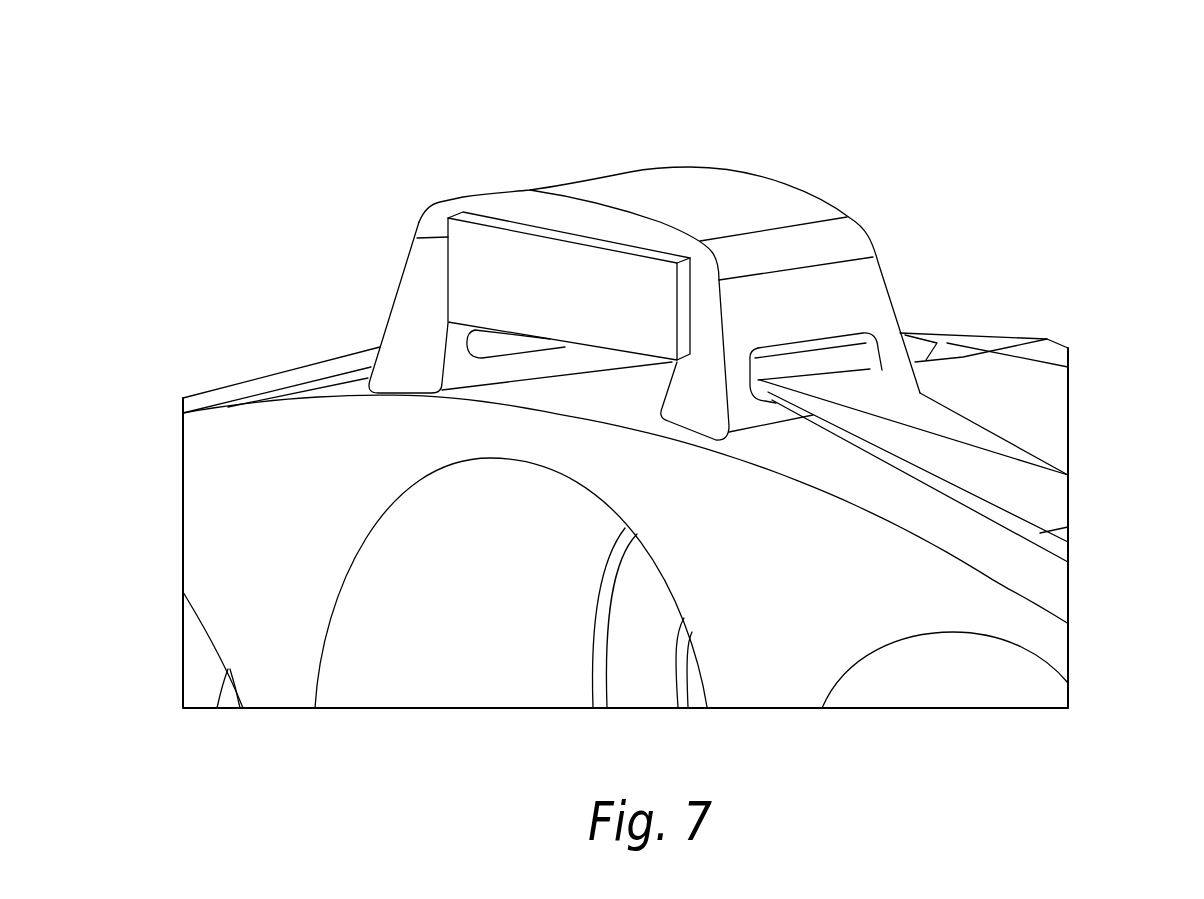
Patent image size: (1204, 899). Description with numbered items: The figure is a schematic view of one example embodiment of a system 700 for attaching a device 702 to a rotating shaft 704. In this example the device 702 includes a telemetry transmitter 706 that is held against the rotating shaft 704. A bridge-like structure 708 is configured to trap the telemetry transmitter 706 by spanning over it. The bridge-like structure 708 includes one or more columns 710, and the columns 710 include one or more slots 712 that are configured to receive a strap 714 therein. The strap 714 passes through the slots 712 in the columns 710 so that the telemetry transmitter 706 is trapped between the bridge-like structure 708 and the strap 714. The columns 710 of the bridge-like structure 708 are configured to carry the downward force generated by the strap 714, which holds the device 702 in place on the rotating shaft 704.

The system 700 is at (1112, 42).
The device 702 is at (647, 347).
The rotating shaft 704 is at (970, 342).
The telemetry transmitter 706 is at (477, 295).
The bridge-like structure 708 is at (604, 176).
The columns 710 is at (405, 323).
The slots 712 is at (813, 343).
The strap 714 is at (550, 353).